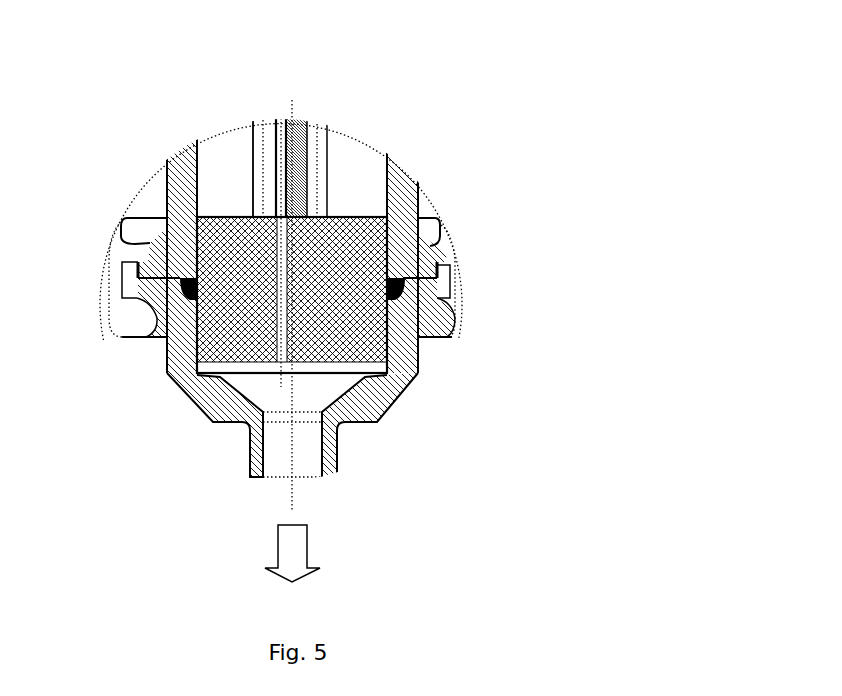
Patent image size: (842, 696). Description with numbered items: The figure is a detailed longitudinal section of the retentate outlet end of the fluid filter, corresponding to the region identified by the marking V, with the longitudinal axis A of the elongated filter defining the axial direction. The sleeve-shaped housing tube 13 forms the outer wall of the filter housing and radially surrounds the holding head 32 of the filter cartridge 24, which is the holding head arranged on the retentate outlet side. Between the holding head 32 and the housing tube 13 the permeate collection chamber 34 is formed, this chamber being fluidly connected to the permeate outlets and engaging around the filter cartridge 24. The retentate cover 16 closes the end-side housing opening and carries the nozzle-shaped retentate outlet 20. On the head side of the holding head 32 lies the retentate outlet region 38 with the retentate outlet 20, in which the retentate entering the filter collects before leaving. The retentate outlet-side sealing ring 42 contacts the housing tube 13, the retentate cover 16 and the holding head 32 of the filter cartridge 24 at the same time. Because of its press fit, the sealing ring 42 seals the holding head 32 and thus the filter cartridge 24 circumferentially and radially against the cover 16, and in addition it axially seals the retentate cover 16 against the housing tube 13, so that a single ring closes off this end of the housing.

The housing tube 13 is at (184, 170).
The permeate collection chamber 34 is at (238, 172).
The filter cartridge 24 is at (274, 116).
The holding head 32 is at (338, 282).
The sealing ring 42 is at (403, 296).
The retentate cover 16 is at (182, 364).
The retentate outlet region 38 is at (278, 397).
The retentate outlet 20 is at (302, 453).
The longitudinal axis A is at (289, 493).
The marking V is at (496, 138).